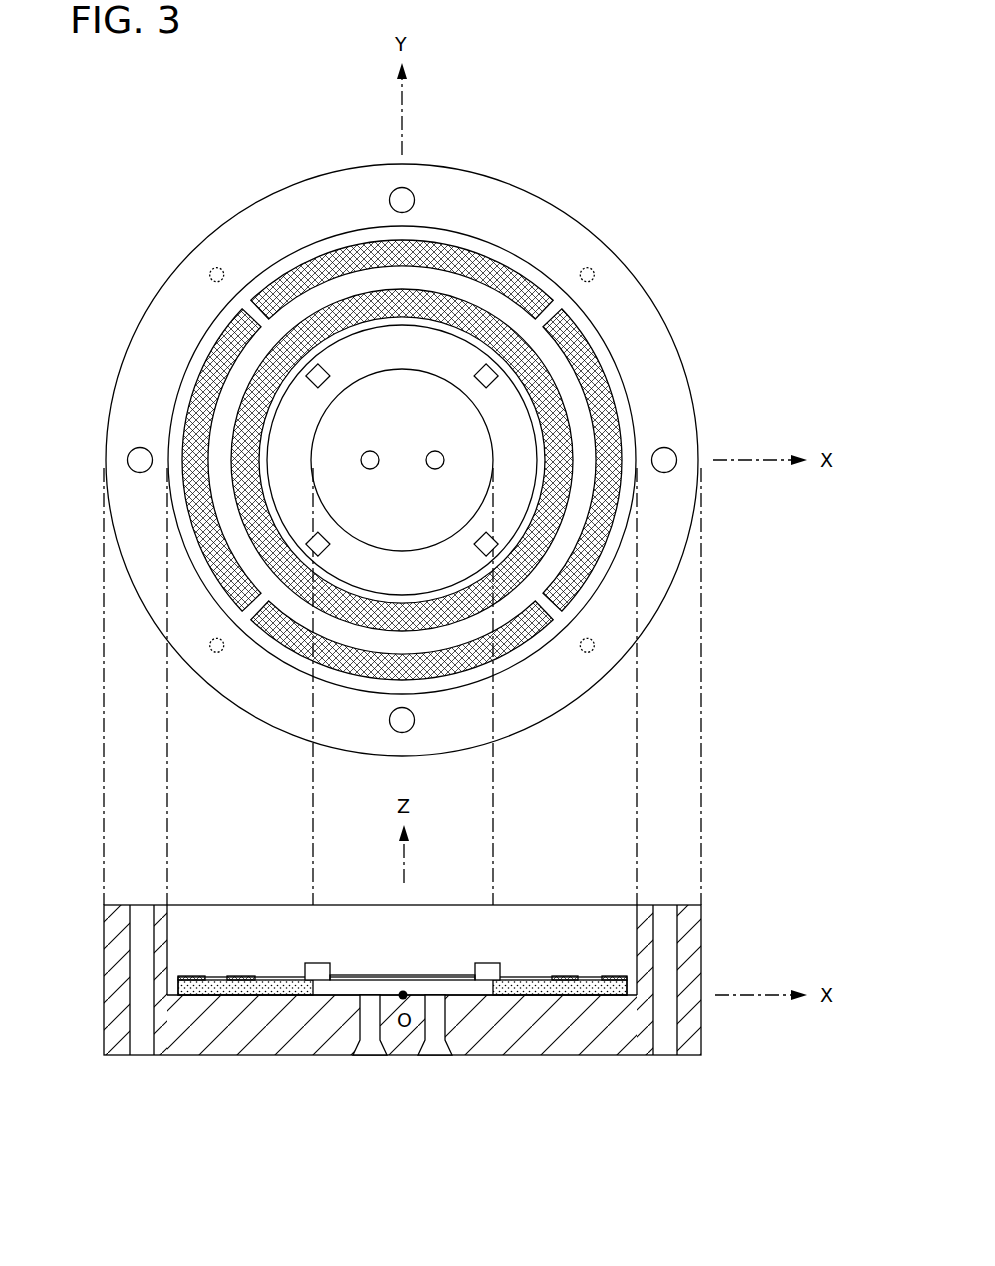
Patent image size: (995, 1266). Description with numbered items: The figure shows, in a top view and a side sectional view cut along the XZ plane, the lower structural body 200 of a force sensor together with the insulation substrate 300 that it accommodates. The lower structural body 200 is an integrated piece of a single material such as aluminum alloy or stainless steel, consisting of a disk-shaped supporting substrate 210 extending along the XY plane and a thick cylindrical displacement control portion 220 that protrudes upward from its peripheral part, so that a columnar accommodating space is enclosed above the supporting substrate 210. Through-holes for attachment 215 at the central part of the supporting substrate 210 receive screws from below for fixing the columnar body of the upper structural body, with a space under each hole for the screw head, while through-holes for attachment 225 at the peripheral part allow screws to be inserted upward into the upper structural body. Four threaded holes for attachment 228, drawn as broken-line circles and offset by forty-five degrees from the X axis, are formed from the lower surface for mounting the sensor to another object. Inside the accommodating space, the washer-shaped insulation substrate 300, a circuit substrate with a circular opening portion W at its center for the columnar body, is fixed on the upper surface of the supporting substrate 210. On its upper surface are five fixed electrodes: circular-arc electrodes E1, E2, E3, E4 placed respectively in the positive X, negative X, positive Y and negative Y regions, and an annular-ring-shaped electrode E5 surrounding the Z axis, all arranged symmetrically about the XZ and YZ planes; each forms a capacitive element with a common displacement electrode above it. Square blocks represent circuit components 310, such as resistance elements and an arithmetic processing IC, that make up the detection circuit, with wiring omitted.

The lower structural body 200 is at (151, 91).
The supporting substrate 210 is at (615, 380).
The through-holes for attachment 215 is at (434, 1080).
The displacement control portion 220 is at (663, 430).
The through-holes for attachment 225 is at (405, 198).
The threaded holes for attachment 228 is at (210, 270).
The insulation substrate 300 is at (460, 357).
The circuit components 310 is at (316, 364).
The individual fixed electrode E1 is at (600, 575).
The individual fixed electrode E2 is at (195, 975).
The individual fixed electrode E3 is at (430, 247).
The individual fixed electrode E4 is at (297, 638).
The individual fixed electrode E5 is at (410, 623).
The circular opening portion W is at (378, 412).